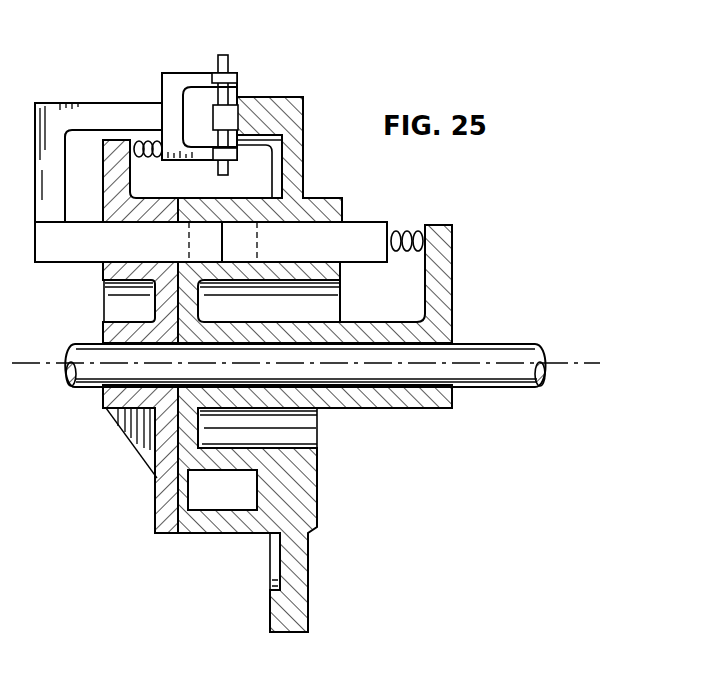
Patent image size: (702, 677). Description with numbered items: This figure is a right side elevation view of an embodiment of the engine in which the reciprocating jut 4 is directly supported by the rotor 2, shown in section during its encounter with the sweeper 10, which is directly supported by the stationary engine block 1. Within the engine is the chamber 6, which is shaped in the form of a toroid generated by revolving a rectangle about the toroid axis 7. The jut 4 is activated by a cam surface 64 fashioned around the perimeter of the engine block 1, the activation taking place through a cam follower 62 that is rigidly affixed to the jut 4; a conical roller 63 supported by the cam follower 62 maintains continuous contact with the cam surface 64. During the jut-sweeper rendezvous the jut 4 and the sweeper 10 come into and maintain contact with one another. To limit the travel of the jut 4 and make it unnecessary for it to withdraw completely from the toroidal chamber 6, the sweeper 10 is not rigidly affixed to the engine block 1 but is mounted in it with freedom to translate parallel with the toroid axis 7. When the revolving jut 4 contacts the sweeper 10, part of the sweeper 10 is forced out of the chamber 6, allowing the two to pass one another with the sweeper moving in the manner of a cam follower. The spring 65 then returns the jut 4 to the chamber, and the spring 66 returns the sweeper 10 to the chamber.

The engine block 1 is at (302, 197).
The rotor 2 is at (103, 280).
The jut 4 is at (118, 251).
The toroidal chamber 6 is at (223, 501).
The toroid axis 7 is at (566, 363).
The sweeper 10 is at (320, 251).
The cam follower 62 is at (97, 103).
The conical roller 63 is at (213, 113).
The cam surface 64 is at (235, 98).
The spring 65 is at (143, 164).
The spring 66 is at (410, 228).